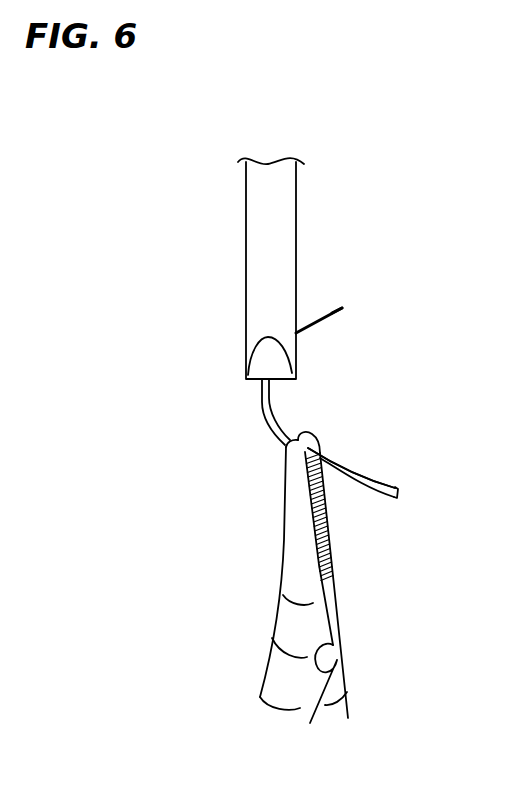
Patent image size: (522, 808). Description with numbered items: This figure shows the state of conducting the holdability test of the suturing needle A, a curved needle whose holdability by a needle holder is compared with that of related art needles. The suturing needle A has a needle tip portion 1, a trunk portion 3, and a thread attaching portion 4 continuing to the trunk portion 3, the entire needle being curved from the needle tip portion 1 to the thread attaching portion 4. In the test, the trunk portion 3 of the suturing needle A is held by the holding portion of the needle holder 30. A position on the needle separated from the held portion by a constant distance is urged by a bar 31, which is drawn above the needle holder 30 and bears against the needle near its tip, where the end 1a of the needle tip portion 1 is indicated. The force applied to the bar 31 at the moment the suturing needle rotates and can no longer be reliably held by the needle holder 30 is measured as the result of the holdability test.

The bar 31 is at (258, 253).
The needle tip portion 1 is at (316, 318).
The thread end 1a is at (342, 308).
The trunk portion 3 is at (262, 402).
The needle holder 30 is at (275, 668).
The thread attaching portion 4 is at (383, 500).
The suturing needle A is at (377, 484).